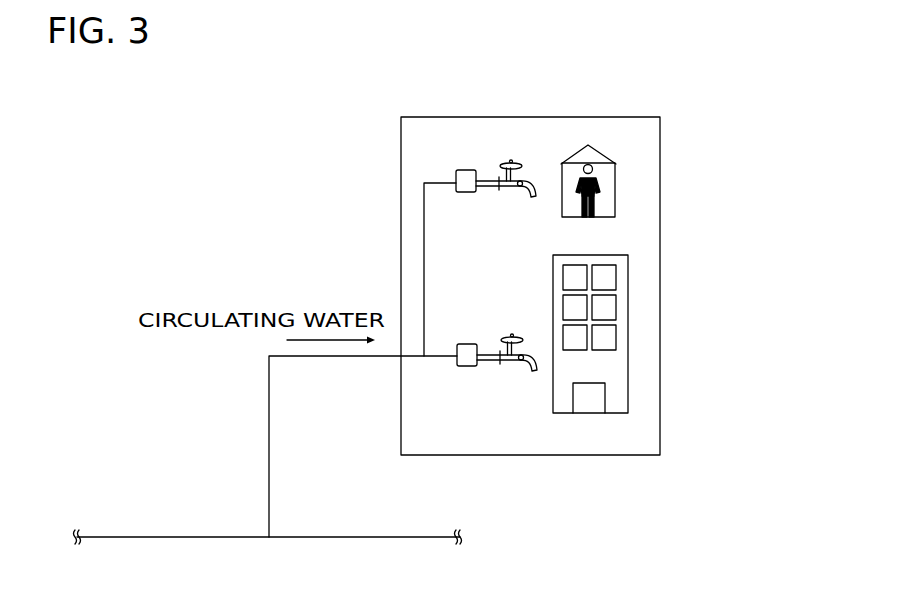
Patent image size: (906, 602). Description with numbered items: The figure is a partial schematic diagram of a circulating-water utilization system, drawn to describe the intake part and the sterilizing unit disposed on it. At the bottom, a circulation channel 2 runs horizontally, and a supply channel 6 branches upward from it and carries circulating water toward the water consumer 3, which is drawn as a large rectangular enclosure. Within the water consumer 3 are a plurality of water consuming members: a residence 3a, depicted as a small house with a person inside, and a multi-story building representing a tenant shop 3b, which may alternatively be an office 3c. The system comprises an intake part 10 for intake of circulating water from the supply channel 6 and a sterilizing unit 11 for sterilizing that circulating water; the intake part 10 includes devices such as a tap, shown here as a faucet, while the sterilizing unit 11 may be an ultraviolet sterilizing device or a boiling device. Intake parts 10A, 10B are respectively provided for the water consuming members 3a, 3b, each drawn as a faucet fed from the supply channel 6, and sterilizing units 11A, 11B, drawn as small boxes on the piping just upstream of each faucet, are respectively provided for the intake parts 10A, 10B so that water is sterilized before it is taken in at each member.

The circulation channel 2 is at (342, 537).
The supply channel 6 is at (269, 385).
The water consumer 3 is at (625, 99).
The residence 3a is at (604, 152).
The tenant shop 3b is at (667, 334).
The office 3c is at (628, 291).
The intake part 10 is at (538, 115).
The intake part 10A is at (528, 160).
The intake part 10B is at (518, 334).
The sterilizing unit 11 is at (454, 133).
The sterilizing unit 11A is at (465, 169).
The sterilizing unit 11B is at (468, 343).